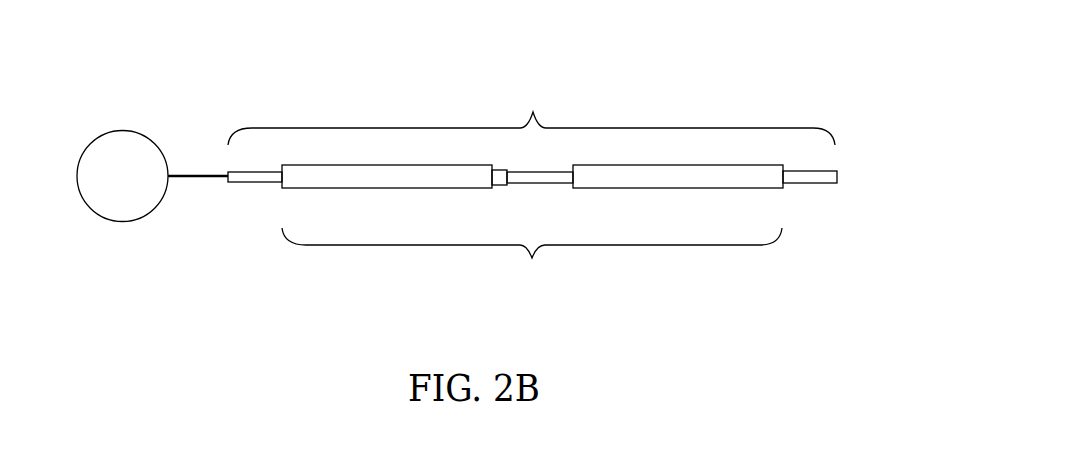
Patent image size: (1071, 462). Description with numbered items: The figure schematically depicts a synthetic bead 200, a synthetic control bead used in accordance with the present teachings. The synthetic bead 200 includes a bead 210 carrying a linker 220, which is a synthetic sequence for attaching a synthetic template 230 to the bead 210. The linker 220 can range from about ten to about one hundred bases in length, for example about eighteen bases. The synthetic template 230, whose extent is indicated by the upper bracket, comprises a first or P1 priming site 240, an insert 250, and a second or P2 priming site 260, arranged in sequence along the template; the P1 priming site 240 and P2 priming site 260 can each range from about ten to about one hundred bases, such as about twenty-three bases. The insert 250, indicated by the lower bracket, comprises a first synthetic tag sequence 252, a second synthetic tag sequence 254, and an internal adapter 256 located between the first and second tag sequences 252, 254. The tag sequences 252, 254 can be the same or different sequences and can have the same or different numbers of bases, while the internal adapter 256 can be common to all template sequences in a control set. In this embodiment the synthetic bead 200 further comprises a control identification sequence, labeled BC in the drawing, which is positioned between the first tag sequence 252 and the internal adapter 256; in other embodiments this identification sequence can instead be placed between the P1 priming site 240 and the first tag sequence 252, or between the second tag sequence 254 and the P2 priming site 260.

The synthetic bead 200 is at (664, 64).
The bead 210 is at (102, 215).
The linker 220 is at (202, 175).
The synthetic template 230 is at (531, 114).
The first or P1 priming site 240 is at (255, 184).
The insert 250 is at (532, 260).
The first synthetic tag sequence 252 is at (372, 189).
The second synthetic tag sequence 254 is at (675, 189).
The internal adapter 256 is at (532, 184).
The second or P2 priming site 260 is at (798, 184).
The break / connection point BC is at (503, 186).